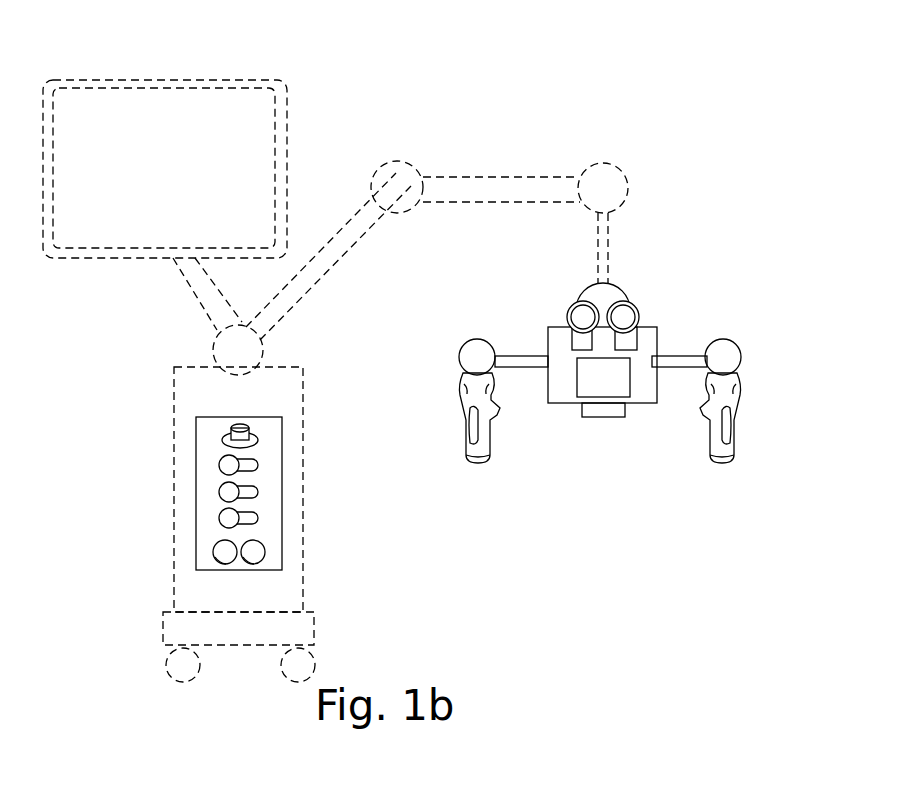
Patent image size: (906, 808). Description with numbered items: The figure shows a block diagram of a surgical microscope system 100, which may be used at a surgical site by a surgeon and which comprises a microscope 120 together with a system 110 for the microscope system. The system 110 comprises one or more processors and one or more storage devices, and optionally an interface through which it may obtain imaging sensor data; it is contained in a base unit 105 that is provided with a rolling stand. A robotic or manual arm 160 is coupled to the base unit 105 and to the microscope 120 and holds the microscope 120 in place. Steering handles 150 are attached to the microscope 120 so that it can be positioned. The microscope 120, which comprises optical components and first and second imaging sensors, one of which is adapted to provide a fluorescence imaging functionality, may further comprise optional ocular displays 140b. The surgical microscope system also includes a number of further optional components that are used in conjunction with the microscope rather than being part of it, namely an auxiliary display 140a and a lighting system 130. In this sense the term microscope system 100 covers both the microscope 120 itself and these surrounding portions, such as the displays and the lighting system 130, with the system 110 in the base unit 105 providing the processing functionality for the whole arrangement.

The microscope system 100 is at (634, 644).
The base unit 105 is at (303, 507).
The system 110 is at (282, 570).
The microscope 120 is at (635, 404).
The lighting system 130 is at (584, 417).
The auxiliary display 140a is at (273, 131).
The ocular displays 140b is at (638, 310).
The steering handles 150 is at (745, 383).
The arm 160 is at (629, 186).